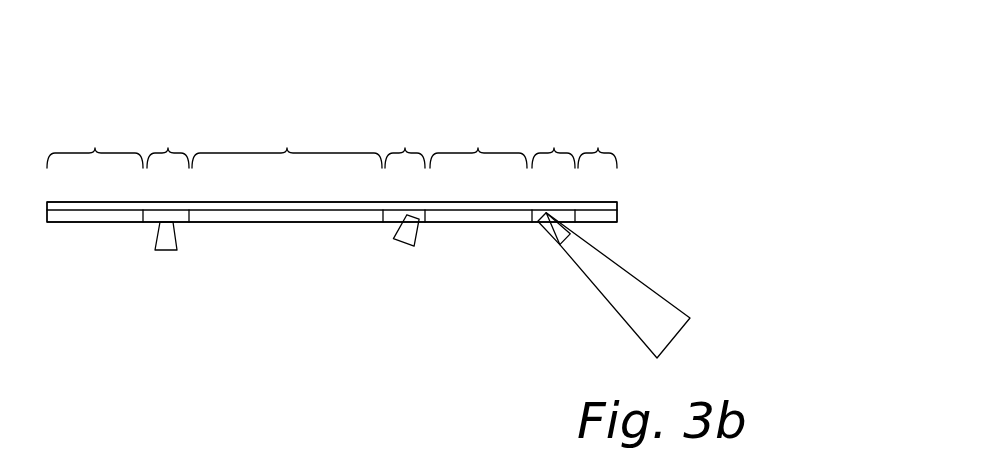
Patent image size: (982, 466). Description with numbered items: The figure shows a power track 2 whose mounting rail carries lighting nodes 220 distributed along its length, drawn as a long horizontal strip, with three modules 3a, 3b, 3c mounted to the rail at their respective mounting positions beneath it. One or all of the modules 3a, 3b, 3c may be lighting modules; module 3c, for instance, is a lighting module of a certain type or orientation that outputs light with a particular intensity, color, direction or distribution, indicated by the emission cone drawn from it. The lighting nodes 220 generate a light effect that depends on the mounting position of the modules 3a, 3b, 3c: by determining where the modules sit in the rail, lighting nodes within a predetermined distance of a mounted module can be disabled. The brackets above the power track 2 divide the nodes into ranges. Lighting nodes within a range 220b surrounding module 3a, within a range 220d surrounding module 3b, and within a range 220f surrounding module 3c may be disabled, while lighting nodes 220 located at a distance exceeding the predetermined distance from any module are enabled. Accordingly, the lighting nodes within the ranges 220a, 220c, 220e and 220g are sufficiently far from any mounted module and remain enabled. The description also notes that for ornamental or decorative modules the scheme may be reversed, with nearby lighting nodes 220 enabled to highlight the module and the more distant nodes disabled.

The power track 2 is at (622, 203).
The lighting nodes 220 is at (622, 215).
The range 220a is at (95, 150).
The range 220b is at (166, 150).
The range 220c is at (287, 141).
The range 220d is at (405, 150).
The range 220e is at (478, 141).
The range 220f is at (555, 150).
The range 220g is at (598, 150).
The module 3a is at (140, 259).
The module 3b is at (377, 259).
The module 3c is at (535, 259).